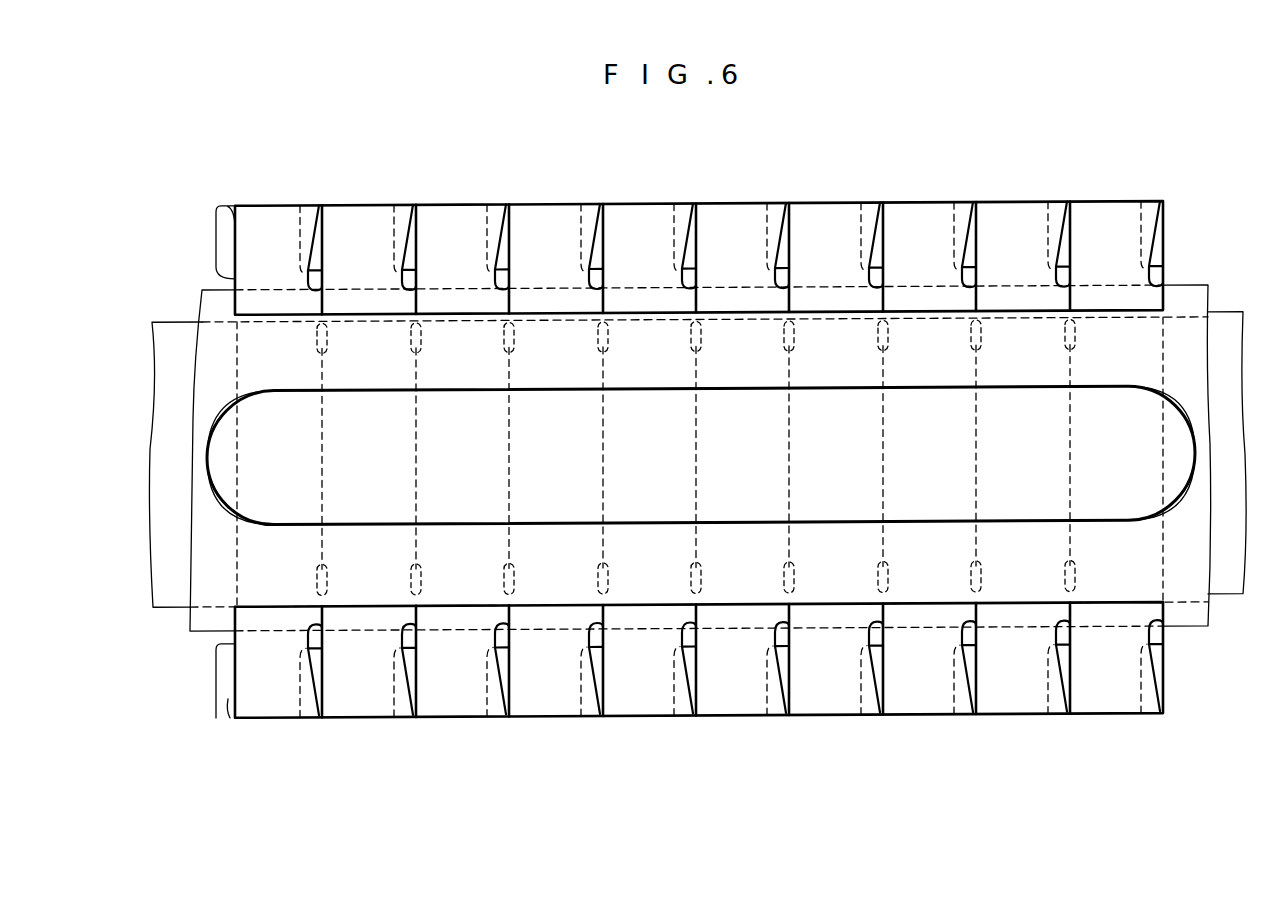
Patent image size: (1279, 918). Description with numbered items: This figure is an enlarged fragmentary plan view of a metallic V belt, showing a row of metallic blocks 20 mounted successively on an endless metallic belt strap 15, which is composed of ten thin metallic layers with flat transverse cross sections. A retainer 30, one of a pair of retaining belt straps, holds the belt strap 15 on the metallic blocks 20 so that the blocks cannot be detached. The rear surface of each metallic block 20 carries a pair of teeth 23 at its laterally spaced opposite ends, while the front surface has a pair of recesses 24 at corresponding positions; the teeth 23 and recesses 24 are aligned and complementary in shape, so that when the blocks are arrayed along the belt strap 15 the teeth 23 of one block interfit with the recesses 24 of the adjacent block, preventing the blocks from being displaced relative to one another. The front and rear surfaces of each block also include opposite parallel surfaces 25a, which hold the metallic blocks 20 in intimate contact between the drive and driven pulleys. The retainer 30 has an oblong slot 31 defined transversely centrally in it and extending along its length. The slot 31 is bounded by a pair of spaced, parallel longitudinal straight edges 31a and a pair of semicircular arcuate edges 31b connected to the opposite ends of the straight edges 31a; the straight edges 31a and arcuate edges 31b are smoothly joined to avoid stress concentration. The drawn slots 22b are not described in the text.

The metallic belt strap 15 is at (168, 600).
The metallic block 20 is at (282, 205).
The slots 22b is at (652, 324).
The tooth 23 is at (214, 240).
The recess 24 is at (668, 232).
The parallel surface 25a is at (236, 206).
The retainer 30 is at (198, 625).
The slot 31 is at (637, 396).
The straight edge 31a is at (560, 395).
The arcuate edge 31b is at (213, 468).